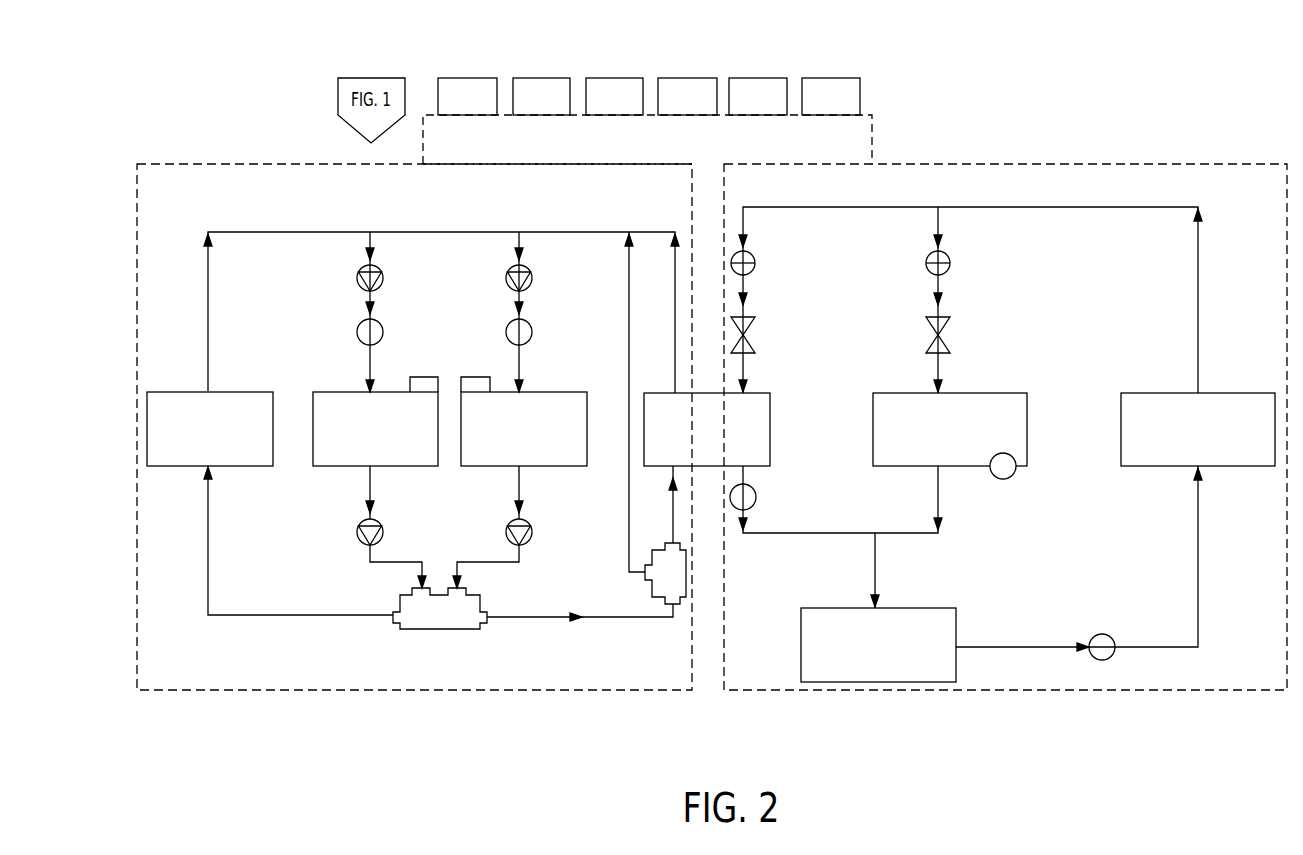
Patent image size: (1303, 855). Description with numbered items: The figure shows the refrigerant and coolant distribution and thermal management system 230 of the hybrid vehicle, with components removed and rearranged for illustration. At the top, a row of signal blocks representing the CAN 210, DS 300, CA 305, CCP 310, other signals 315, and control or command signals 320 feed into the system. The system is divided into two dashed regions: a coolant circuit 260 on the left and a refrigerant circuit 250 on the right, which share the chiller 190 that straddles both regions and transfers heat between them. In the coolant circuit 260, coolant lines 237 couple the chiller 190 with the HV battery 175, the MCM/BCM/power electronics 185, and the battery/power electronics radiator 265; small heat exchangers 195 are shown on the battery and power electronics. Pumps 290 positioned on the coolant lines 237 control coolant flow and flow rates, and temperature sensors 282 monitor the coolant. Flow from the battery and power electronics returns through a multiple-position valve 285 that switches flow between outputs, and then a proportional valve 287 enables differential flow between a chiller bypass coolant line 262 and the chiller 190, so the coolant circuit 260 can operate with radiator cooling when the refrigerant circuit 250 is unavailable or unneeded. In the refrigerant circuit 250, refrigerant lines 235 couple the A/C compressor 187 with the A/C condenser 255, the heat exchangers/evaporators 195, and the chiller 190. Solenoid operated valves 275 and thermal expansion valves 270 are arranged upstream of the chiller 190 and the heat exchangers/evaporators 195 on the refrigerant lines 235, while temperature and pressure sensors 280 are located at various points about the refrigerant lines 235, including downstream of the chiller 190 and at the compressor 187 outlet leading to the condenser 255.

The controller area network (CAN) 210 is at (480, 78).
The DS signal 300 is at (553, 78).
The CA signal 305 is at (618, 78).
The CCP signal 310 is at (695, 78).
The other signals (OS) 315 is at (757, 78).
The control or command signals (CS) 320 is at (833, 78).
The coolant circuit 260 is at (530, 160).
The thermal management system 230 is at (465, 704).
The refrigerant circuit 250 is at (1060, 160).
The coolant lines 237 is at (244, 232).
The chiller bypass coolant line 262 is at (629, 305).
The battery/power electronics radiator 265 is at (228, 391).
The pumps 290 is at (357, 283).
The temperature sensors 282 is at (357, 337).
The high-voltage storage battery 175 is at (333, 467).
The MCM/BCM/power electronics 185 is at (553, 392).
The heat exchangers/evaporators 195 is at (478, 377).
The multiple-position valves 285 is at (400, 630).
The proportional valve 287 is at (645, 580).
The chiller 190 is at (770, 429).
The refrigerant lines 235 is at (846, 208).
The solenoid operated valves 275 is at (754, 270).
The thermal expansion valves 270 is at (751, 344).
The temperature and pressure sensors 280 is at (756, 493).
The A/C condenser 255 is at (1165, 393).
The refrigerant compressor 187 is at (957, 636).